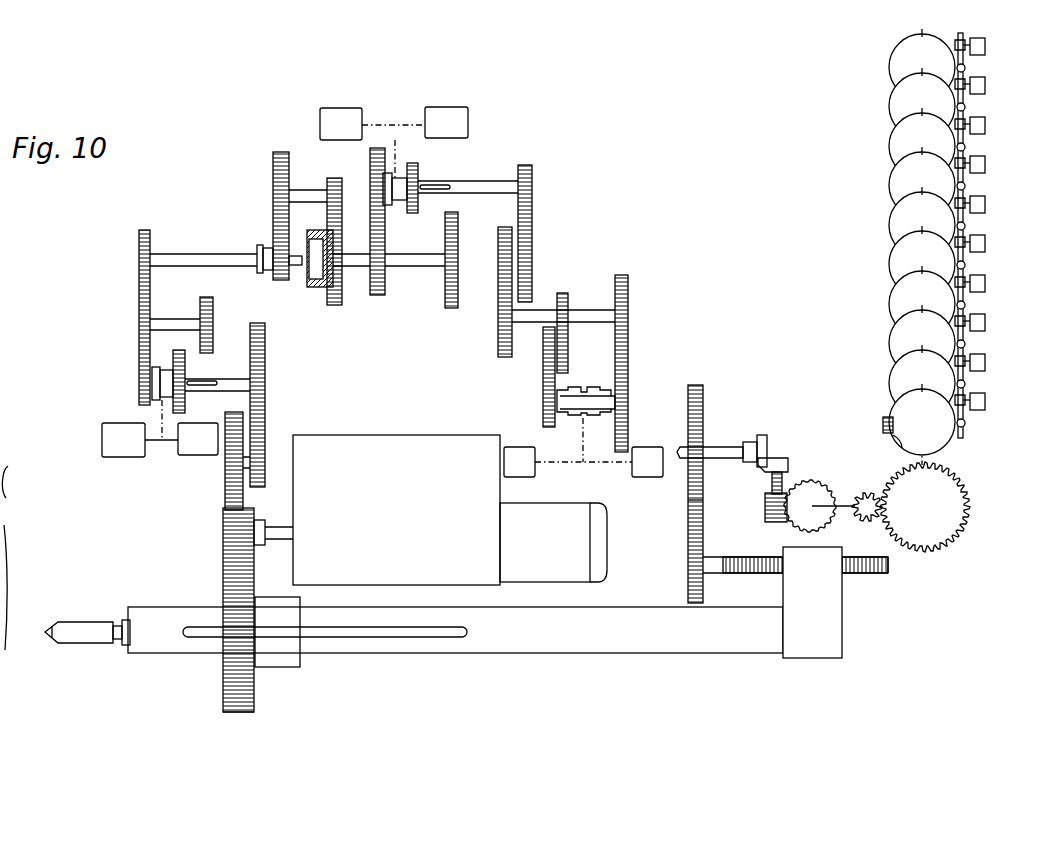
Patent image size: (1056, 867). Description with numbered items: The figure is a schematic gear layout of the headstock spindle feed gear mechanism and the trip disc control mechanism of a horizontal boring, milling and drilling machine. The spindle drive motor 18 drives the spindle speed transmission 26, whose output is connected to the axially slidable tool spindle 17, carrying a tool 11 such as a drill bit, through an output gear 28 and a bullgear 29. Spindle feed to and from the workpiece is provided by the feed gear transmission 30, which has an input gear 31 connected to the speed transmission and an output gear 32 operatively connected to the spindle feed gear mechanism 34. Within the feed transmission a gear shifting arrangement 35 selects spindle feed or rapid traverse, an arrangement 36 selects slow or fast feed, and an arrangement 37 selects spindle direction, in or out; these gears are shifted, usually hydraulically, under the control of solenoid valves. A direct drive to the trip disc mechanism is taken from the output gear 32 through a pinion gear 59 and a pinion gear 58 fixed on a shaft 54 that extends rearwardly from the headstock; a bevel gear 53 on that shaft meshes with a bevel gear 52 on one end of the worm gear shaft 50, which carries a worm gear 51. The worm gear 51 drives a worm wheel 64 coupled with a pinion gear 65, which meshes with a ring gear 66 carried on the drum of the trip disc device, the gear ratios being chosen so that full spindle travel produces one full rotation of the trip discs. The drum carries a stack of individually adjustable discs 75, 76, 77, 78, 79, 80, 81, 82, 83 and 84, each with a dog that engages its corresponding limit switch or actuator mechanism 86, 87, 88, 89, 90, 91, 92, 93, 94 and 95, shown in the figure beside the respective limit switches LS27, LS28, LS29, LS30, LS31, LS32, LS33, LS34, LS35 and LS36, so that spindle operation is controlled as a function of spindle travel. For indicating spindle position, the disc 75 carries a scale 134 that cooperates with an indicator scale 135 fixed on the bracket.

The tool 11 is at (84, 622).
The tool spindle 17 is at (163, 653).
The motor 18 is at (560, 572).
The spindle speed transmission 26 is at (417, 435).
The output gear 28 is at (222, 535).
The bullgear 29 is at (243, 712).
The feed gear transmission 30 is at (548, 207).
The input gear 31 is at (225, 488).
The output gear 32 is at (688, 568).
The spindle feed gear mechanism 34 is at (852, 584).
The gear shifting arrangement 35 is at (165, 456).
The gear shifting arrangement 36 is at (399, 108).
The gear shifting arrangement 37 is at (594, 468).
The worm gear shaft 50 is at (770, 485).
The worm gear 51 is at (765, 507).
The bevel gear 52 is at (786, 462).
The bevel gear 53 is at (767, 441).
The shaft 54 is at (722, 447).
The pinion gear 58 is at (704, 428).
The pinion gear 59 is at (688, 513).
The worm wheel 64 is at (796, 524).
The pinion gear 65 is at (862, 519).
The ring gear 66 is at (962, 527).
The adjustable disc 75 is at (898, 410).
The adjustable disc 76 is at (891, 375).
The adjustable disc 77 is at (891, 335).
The adjustable disc 78 is at (891, 296).
The adjustable disc 79 is at (891, 256).
The adjustable disc 80 is at (891, 217).
The adjustable disc 81 is at (891, 177).
The adjustable disc 82 is at (891, 138).
The adjustable disc 83 is at (891, 98).
The adjustable disc 84 is at (891, 59).
The limit switch or actuator mechanism 86 is at (966, 427).
The limit switch or actuator mechanism 87 is at (966, 384).
The limit switch or actuator mechanism 88 is at (966, 344).
The limit switch or actuator mechanism 89 is at (966, 305).
The limit switch or actuator mechanism 90 is at (966, 265).
The limit switch or actuator mechanism 91 is at (966, 226).
The limit switch or actuator mechanism 92 is at (966, 186).
The limit switch or actuator mechanism 93 is at (966, 147).
The limit switch or actuator mechanism 94 is at (966, 107).
The limit switch or actuator mechanism 95 is at (966, 68).
The scale 134 is at (900, 446).
The indicator scale 135 is at (883, 428).
The limit switch LS27 is at (987, 408).
The limit switch LS28 is at (987, 369).
The limit switch LS29 is at (987, 329).
The limit switch LS30 is at (987, 290).
The limit switch LS31 is at (987, 250).
The limit switch LS32 is at (987, 211).
The limit switch LS33 is at (987, 171).
The limit switch LS34 is at (987, 132).
The limit switch LS35 is at (987, 92).
The limit switch LS36 is at (987, 53).